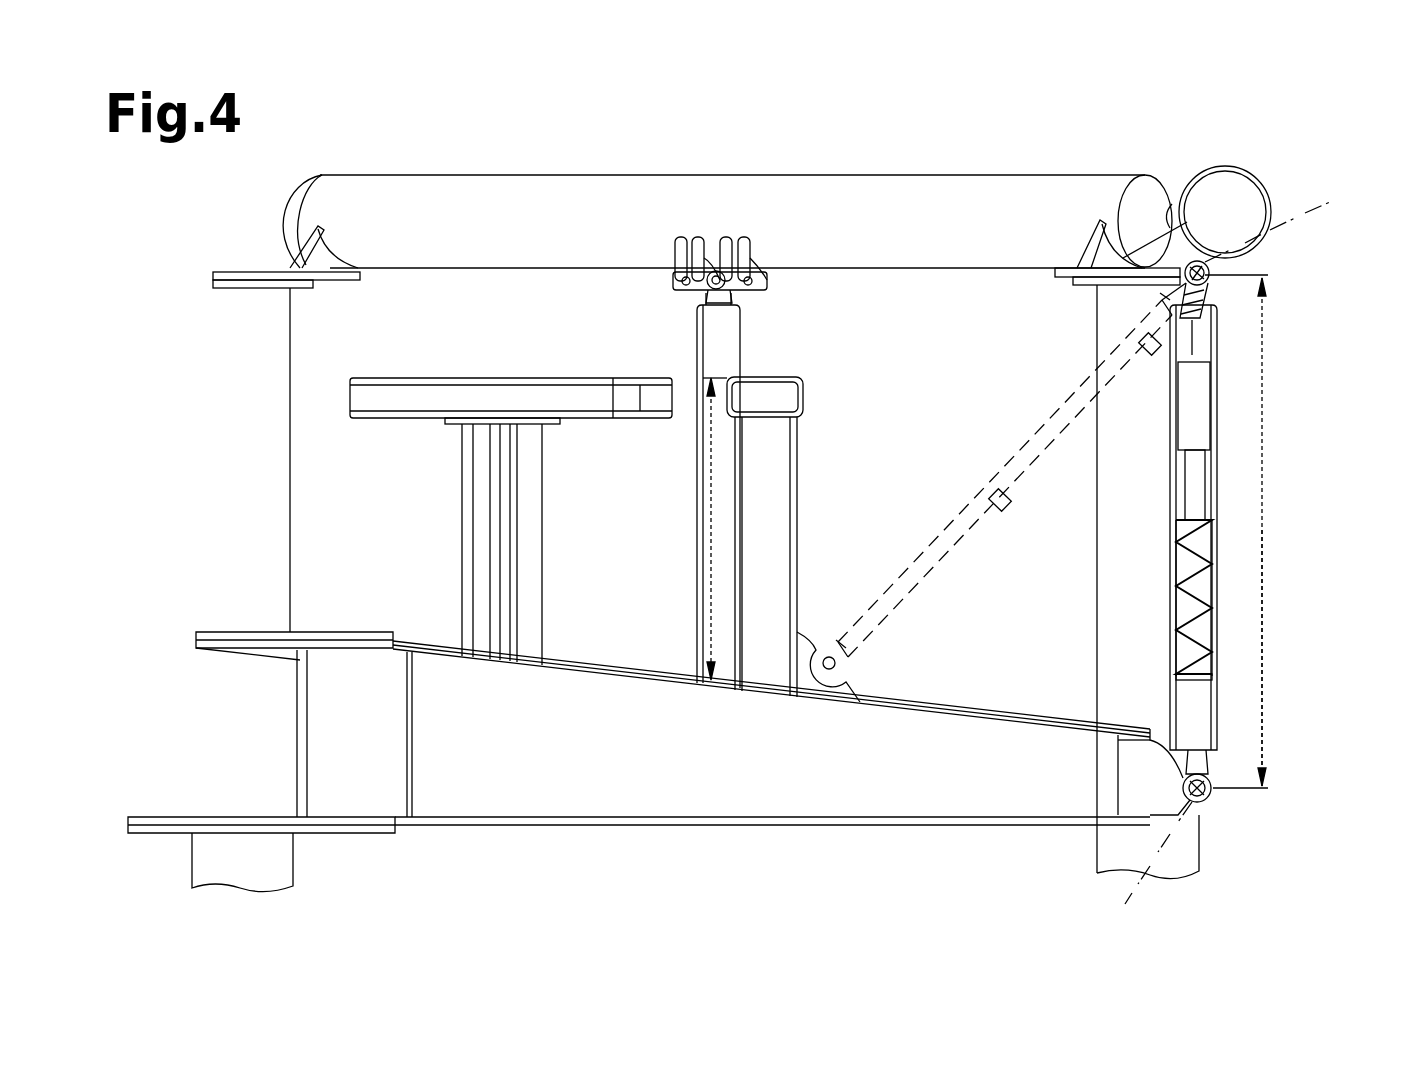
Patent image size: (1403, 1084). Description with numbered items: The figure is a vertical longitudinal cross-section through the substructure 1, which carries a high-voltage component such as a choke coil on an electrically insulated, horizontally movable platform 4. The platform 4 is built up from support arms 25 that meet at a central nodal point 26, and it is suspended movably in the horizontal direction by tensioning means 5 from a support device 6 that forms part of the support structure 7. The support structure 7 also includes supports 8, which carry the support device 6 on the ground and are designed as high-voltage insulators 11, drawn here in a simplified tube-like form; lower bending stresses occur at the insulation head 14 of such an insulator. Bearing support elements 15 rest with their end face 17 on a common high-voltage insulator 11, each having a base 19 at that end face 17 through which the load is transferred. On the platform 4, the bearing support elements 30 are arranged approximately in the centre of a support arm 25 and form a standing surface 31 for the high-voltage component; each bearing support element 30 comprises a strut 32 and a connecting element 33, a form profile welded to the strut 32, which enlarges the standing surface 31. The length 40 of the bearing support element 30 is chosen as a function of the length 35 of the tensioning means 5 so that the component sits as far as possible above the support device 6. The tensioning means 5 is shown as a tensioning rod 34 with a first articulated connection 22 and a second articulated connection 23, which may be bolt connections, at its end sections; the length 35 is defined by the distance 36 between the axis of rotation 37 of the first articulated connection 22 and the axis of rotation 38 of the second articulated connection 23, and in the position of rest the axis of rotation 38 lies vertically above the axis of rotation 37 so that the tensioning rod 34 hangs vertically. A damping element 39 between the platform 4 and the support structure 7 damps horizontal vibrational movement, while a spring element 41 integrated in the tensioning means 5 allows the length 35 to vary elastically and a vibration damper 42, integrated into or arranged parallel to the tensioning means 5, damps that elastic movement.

The substructure 1 is at (1304, 106).
The platform 4 is at (740, 797).
The tensioning means 5 is at (1236, 616).
The support device 6 is at (1276, 184).
The support structure 7 is at (1042, 288).
The supports 8 is at (1190, 830).
The high-voltage insulators 11 is at (1178, 850).
The insulation head 14 is at (1062, 334).
The bearing support elements 15 is at (548, 222).
The end face 17 is at (1183, 172).
The base 19 is at (1106, 236).
The first articulated connection 22 is at (1154, 783).
The second articulated connection 23 is at (1160, 294).
The support arms 25 is at (846, 826).
The central nodal point 26 is at (322, 847).
The bearing support elements 30 is at (986, 492).
The standing surface 31 is at (770, 376).
The strut 32 is at (786, 606).
The connecting element 33 is at (806, 397).
The tensioning rod 34 is at (1216, 352).
The length 35 is at (1266, 566).
The distance 36 is at (1266, 732).
The axis of rotation 37 is at (1153, 839).
The axis of rotation 38 is at (1206, 264).
The damping element 39 is at (1230, 390).
The length 40 is at (708, 546).
The spring element 41 is at (1200, 618).
The vibration damper 42 is at (1193, 417).